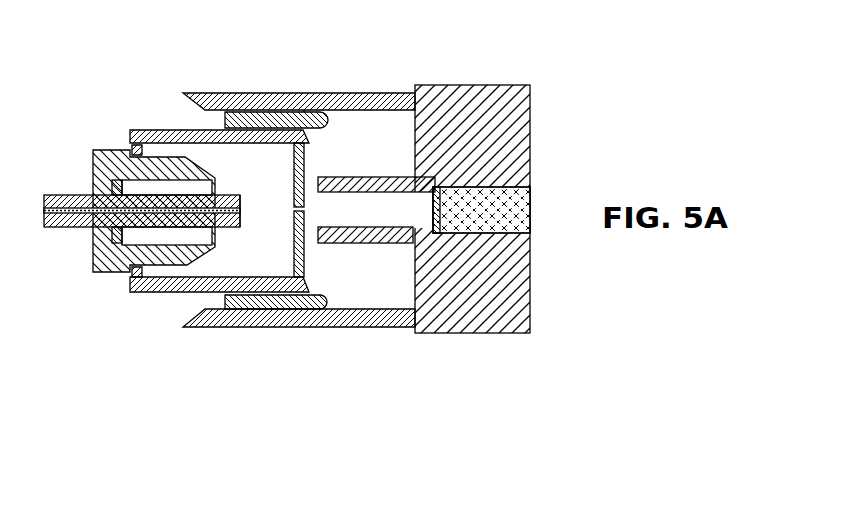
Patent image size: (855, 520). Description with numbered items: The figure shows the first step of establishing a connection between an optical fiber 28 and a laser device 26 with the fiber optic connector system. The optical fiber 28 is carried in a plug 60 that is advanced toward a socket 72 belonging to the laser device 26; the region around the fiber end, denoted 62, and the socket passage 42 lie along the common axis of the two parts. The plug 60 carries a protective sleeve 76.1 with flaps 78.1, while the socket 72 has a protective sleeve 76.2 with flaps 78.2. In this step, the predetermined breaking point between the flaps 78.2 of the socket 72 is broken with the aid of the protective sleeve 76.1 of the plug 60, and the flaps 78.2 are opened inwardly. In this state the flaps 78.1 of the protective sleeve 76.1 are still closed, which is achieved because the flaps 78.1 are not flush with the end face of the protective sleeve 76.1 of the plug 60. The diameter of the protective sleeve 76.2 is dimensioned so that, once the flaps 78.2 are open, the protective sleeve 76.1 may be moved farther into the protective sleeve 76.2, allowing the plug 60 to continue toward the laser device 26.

The laser device 26 is at (477, 352).
The optical fiber 28 is at (68, 195).
The tube 42 is at (424, 211).
The plug 60 is at (113, 299).
The rod end 62 is at (240, 210).
The socket 72 is at (387, 153).
The protective sleeve 76.1 is at (160, 292).
The protective sleeve 76.2 is at (263, 323).
The flaps 78.1 is at (306, 170).
The flaps 78.2 is at (300, 112).